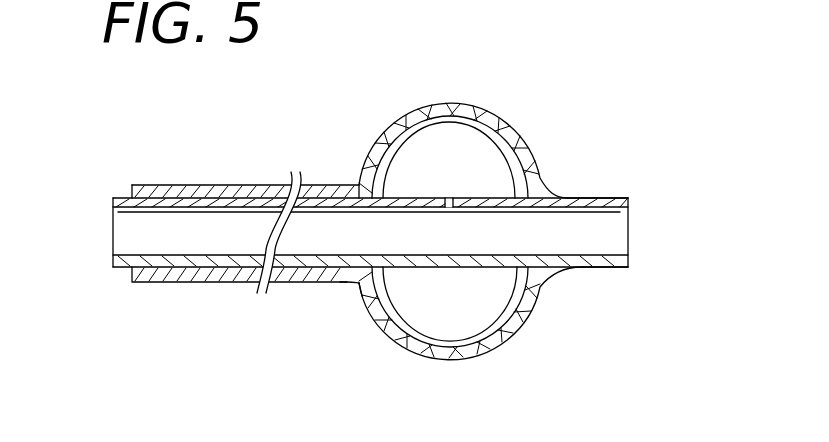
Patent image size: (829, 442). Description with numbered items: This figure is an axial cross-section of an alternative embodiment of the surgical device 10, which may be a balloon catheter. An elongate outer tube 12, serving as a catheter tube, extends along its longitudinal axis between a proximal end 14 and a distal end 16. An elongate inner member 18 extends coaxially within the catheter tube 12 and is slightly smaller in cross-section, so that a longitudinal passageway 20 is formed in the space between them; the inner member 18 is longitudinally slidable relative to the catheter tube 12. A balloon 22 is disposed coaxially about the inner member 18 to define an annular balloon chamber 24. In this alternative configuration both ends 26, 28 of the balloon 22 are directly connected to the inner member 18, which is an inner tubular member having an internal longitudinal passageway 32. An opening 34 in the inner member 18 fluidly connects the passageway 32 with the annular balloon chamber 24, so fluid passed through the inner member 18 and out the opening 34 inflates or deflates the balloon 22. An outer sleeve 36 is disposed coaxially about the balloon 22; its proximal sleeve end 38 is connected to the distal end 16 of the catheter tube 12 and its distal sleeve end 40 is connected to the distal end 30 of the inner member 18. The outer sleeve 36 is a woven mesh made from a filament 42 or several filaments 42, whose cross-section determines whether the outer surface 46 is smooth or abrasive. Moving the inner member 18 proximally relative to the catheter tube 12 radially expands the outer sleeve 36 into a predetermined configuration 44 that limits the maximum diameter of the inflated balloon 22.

The surgical device 10 is at (365, 106).
The outer tube 12 is at (200, 187).
The proximal end 14 is at (128, 186).
The distal end 16 is at (347, 281).
The inner member 18 is at (112, 268).
The longitudinal passageway 20 is at (125, 197).
The balloon 22 is at (535, 290).
The annular balloon chamber 24 is at (478, 152).
The end of the balloon 26 is at (360, 296).
The end of the balloon 28 is at (535, 173).
The distal end of the inner member 30 is at (604, 268).
The internal longitudinal passageway 32 is at (113, 240).
The opening 34 is at (450, 208).
The outer sleeve 36 is at (450, 103).
The proximal sleeve end 38 is at (359, 192).
The distal sleeve end 40 is at (556, 198).
The filament 42 is at (512, 332).
The predetermined configuration 44 is at (447, 359).
The outer surface 46 is at (490, 350).